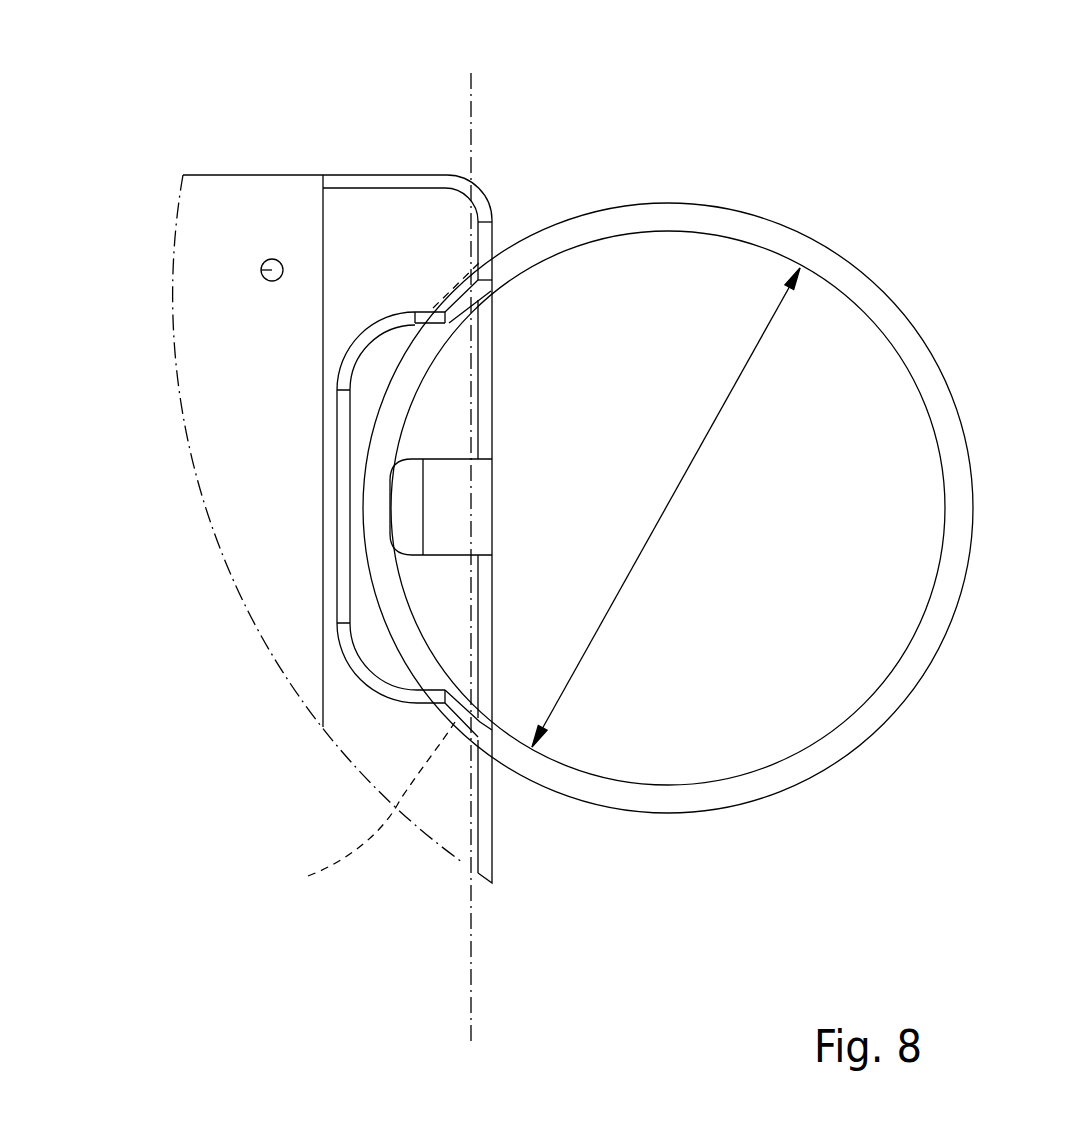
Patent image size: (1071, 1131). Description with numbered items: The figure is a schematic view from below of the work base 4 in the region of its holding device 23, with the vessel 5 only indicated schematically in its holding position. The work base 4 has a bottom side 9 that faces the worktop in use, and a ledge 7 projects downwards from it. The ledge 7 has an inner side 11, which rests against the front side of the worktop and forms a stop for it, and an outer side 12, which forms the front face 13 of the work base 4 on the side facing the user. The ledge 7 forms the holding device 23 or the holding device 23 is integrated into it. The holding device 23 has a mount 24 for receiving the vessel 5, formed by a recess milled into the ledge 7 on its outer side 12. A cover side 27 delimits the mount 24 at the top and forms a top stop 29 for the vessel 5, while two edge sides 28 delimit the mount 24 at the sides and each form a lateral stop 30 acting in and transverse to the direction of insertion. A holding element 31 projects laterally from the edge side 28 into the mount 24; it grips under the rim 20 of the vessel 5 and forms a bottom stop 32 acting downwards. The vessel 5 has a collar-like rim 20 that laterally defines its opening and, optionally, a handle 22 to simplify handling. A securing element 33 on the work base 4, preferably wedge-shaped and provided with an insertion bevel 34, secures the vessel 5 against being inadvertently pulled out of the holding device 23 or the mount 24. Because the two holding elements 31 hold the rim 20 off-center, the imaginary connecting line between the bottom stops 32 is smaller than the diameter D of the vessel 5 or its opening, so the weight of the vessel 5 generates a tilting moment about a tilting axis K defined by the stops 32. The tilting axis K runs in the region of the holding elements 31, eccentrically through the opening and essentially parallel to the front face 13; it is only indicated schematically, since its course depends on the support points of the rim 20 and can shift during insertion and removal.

The work base 4 is at (290, 130).
The vessel 5 is at (668, 526).
The ledge 7 is at (383, 175).
The bottom side 9 is at (218, 228).
The inner side 11 is at (323, 317).
The outer side 12 is at (562, 499).
The front face 13 is at (493, 233).
The rim 20 is at (668, 526).
The handle 22 is at (830, 187).
The holding device 23 is at (512, 526).
The mount 24 is at (337, 422).
The cover side 27 is at (272, 578).
The edge side 28 is at (362, 576).
The top stop 29 is at (272, 578).
The lateral stop 30 is at (362, 576).
The holding element 31 is at (553, 533).
The bottom stop 32 is at (480, 265).
The securing element 33 is at (413, 478).
The insertion bevel 34 is at (272, 578).
The tilting axis K is at (473, 88).
The diameter D is at (760, 348).